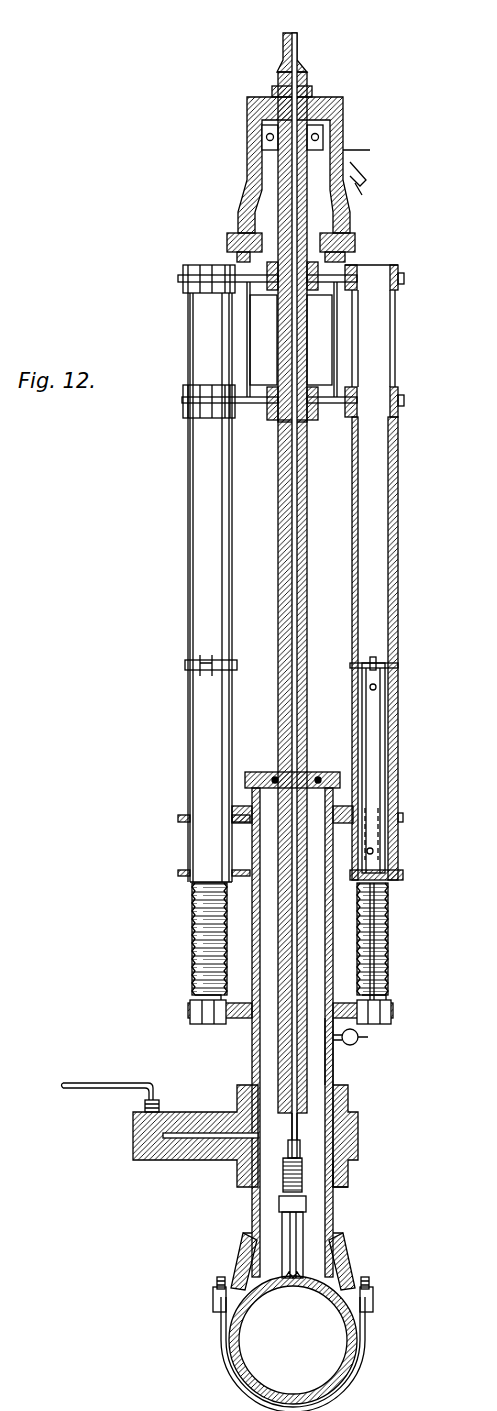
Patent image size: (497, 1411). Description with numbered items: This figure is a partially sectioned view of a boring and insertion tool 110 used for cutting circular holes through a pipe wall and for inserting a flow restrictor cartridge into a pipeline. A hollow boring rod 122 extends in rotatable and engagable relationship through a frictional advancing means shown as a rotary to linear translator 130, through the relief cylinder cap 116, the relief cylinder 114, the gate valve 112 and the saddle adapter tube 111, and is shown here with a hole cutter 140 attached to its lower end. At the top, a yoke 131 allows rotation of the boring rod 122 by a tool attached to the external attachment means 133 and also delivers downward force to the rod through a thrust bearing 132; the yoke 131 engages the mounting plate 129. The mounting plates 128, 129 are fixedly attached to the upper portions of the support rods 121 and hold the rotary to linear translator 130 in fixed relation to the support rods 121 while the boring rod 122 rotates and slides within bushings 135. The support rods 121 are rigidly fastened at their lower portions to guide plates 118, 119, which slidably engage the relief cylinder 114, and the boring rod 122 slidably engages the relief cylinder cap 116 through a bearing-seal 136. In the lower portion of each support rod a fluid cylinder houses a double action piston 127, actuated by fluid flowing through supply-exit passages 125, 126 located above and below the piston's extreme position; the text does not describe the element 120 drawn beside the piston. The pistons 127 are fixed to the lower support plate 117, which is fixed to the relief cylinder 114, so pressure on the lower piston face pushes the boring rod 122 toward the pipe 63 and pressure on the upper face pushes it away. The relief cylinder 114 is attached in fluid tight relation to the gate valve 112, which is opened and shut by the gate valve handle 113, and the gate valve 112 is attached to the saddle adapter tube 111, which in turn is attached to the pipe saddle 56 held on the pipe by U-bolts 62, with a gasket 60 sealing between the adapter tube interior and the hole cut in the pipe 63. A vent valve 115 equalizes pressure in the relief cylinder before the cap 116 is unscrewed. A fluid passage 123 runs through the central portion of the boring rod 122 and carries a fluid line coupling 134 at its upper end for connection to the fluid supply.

The pipe saddle 56 is at (350, 1252).
The gasket 60 is at (235, 1290).
The U-bolts 62 is at (222, 1345).
The pipe 63 is at (365, 1352).
The boring and insertion tool 110 is at (175, 497).
The saddle adapter tube 111 is at (338, 1205).
The gate valve 112 is at (358, 1135).
The gate valve handle 113 is at (90, 1082).
The relief cylinder 114 is at (335, 1065).
The vent valve 115 is at (368, 1037).
The relief cylinder cap 116 is at (318, 772).
The lower support plate 117 is at (393, 1005).
The guide plate 118 is at (400, 880).
The guide plate 119 is at (183, 818).
The piston 120 is at (378, 726).
The support rods 121 is at (395, 536).
The hollow boring rod 122 is at (305, 508).
The fluid passage 123 is at (292, 580).
The supply-exit passage 125 is at (376, 687).
The supply-exit passage 126 is at (373, 851).
The double action piston 127 is at (400, 787).
The mounting plate 128 is at (398, 388).
The mounting plate 129 is at (400, 265).
The rotary to linear translator 130 is at (340, 327).
The yoke 131 is at (255, 108).
The thrust bearing 132 is at (330, 125).
The external attachment means 133 is at (305, 62).
The fluid line coupling 134 is at (281, 34).
The bushings 135 is at (350, 262).
The bearing-seal 136 is at (275, 772).
The hole cutter 140 is at (285, 1233).